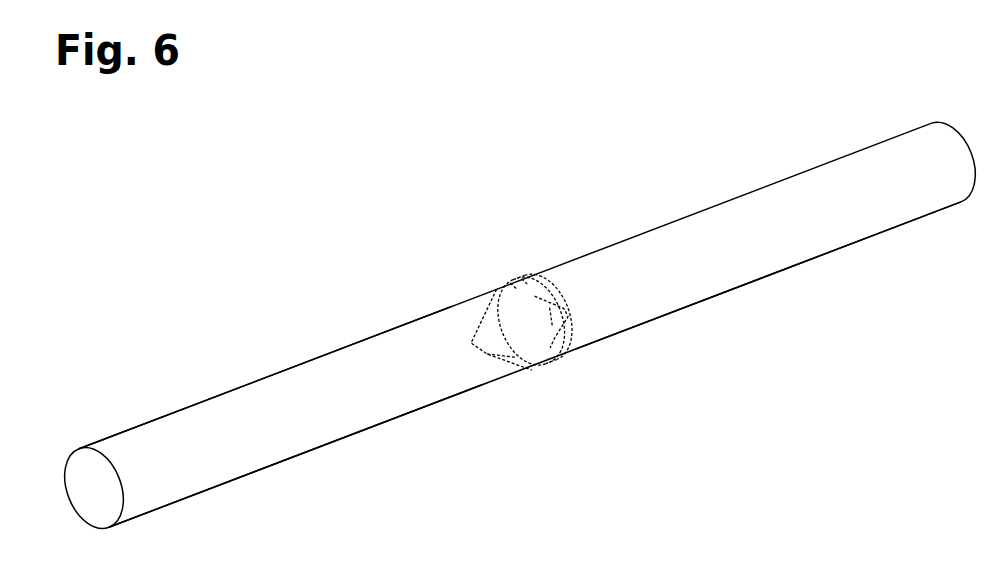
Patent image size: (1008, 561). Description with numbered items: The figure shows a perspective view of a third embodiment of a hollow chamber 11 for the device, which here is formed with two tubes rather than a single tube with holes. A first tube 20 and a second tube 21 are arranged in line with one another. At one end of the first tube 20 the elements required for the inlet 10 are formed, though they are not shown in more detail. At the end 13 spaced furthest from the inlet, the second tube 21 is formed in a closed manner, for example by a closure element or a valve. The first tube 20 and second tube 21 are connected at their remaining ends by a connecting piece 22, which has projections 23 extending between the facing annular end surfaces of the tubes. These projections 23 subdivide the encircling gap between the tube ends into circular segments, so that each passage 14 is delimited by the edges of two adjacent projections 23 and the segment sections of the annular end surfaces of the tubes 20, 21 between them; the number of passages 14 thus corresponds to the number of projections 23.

The inlet 10 is at (85, 480).
The hollow chamber 11 is at (267, 393).
The end 13 is at (957, 150).
The passage 14 is at (556, 342).
The first tube 20 is at (392, 415).
The second tube 21 is at (696, 282).
The connecting piece 22 is at (492, 343).
The projections 23 is at (518, 290).